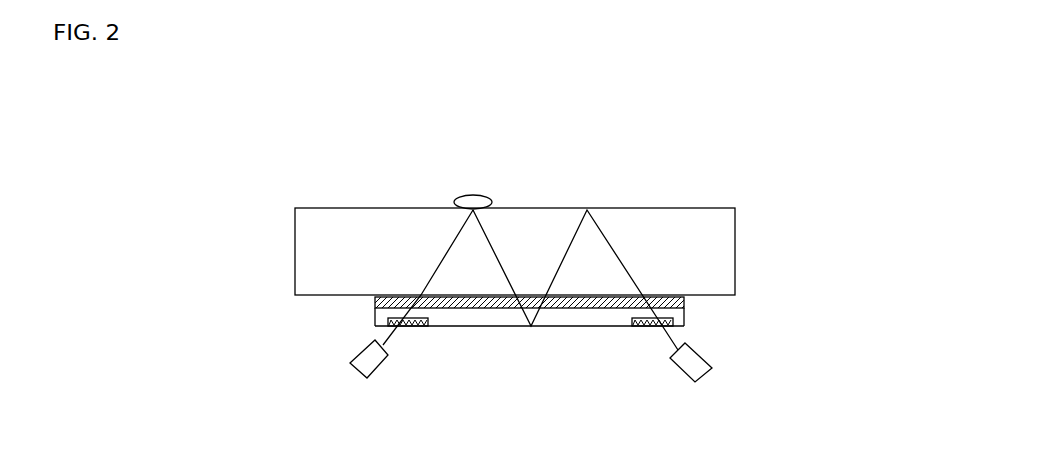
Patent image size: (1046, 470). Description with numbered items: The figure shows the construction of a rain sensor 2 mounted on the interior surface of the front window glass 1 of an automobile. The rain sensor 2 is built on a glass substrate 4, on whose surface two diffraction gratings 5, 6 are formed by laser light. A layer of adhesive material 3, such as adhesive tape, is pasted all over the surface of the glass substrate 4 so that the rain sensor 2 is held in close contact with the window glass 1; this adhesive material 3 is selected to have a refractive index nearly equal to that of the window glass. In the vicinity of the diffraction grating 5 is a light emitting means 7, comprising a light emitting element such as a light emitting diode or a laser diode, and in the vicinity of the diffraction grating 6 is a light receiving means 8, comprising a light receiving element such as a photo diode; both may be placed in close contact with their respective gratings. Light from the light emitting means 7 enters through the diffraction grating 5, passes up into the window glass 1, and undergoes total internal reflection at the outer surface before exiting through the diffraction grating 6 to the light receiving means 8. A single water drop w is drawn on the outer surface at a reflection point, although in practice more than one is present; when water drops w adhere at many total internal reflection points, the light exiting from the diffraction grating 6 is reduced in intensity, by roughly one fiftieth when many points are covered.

The front window glass 1 is at (307, 247).
The rain sensor 2 is at (537, 352).
The adhesive material 3 is at (377, 300).
The glass substrate 4 is at (467, 326).
The diffraction grating 5 is at (642, 326).
The diffraction grating 6 is at (415, 326).
The light emitting means 7 is at (702, 375).
The light receiving means 8 is at (352, 364).
The water drop w is at (473, 200).